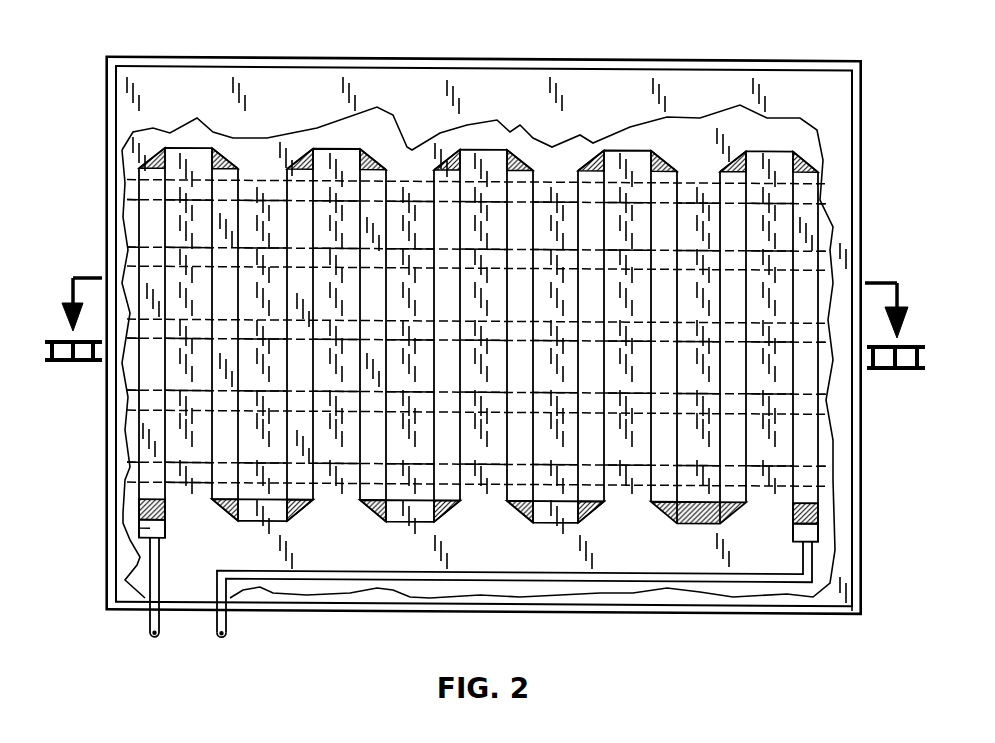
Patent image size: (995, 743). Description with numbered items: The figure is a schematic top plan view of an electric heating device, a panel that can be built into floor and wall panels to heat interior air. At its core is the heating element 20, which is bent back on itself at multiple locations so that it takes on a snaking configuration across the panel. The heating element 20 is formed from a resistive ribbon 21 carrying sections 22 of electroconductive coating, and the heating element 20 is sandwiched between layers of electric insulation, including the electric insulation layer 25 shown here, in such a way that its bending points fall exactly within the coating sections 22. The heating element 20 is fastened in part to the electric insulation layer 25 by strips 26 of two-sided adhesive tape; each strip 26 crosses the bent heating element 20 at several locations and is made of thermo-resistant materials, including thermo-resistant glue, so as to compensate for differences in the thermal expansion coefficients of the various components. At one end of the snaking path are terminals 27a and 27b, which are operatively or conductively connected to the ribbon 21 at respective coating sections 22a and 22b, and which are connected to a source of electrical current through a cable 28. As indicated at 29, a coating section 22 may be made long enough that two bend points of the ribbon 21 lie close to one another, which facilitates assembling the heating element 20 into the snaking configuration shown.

The heating element 20 is at (786, 138).
The resistive ribbon 21 is at (228, 257).
The sections of electroconductive coating 22 is at (600, 168).
The coating section 22a is at (142, 504).
The coating section 22b is at (818, 505).
The electric insulation layer 25 is at (412, 562).
The strips of two-sided adhesive tape 26 is at (780, 250).
The terminal 27a is at (150, 528).
The terminal 27b is at (813, 535).
The cable 28 is at (215, 622).
The long electroconductive coating section 29 is at (693, 523).